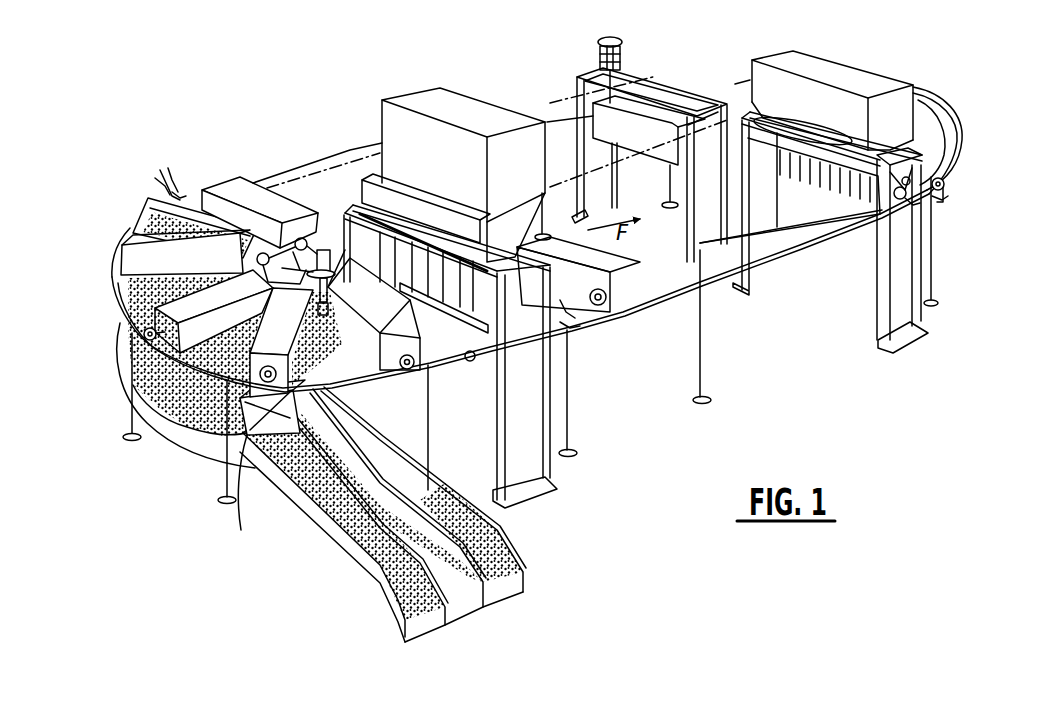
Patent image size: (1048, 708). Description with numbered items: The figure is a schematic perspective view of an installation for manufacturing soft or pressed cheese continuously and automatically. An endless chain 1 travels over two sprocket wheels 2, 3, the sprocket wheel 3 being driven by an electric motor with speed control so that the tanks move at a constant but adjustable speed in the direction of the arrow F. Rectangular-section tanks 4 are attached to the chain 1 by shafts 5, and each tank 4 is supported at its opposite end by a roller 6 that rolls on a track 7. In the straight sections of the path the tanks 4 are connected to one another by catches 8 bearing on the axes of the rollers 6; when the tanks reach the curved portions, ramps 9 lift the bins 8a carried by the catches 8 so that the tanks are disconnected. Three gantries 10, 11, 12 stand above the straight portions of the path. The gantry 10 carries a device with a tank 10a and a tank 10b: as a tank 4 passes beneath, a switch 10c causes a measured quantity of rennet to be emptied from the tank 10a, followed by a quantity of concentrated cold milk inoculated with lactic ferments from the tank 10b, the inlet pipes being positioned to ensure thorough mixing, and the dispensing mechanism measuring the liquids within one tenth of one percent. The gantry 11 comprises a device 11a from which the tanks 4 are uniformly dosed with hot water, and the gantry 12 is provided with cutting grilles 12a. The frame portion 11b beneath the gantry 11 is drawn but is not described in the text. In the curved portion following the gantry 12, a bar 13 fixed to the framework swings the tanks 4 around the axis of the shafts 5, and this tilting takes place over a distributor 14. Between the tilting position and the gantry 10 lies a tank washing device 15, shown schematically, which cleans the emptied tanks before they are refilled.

The endless chain 1 is at (567, 177).
The sprocket wheel 2 is at (362, 276).
The sprocket wheel 3 is at (847, 127).
The tank 4 is at (203, 207).
The shaft 5 is at (308, 246).
The roller 6 is at (144, 335).
The track 7 is at (340, 176).
The catch 8 is at (172, 180).
The bin 8a is at (170, 186).
The ramp 9 is at (178, 194).
The gantry 10 is at (442, 272).
The tank 10a is at (383, 183).
The tank 10b is at (418, 100).
The switch 10c is at (490, 352).
The gantry 11 is at (846, 184).
The device 11a is at (780, 60).
The second hopper frame 11b is at (902, 212).
The gantry 12 is at (637, 140).
The cutting grille 12a is at (602, 53).
The bar 13 is at (293, 255).
The distributor 14 is at (118, 405).
The tank washing device 15 is at (267, 423).